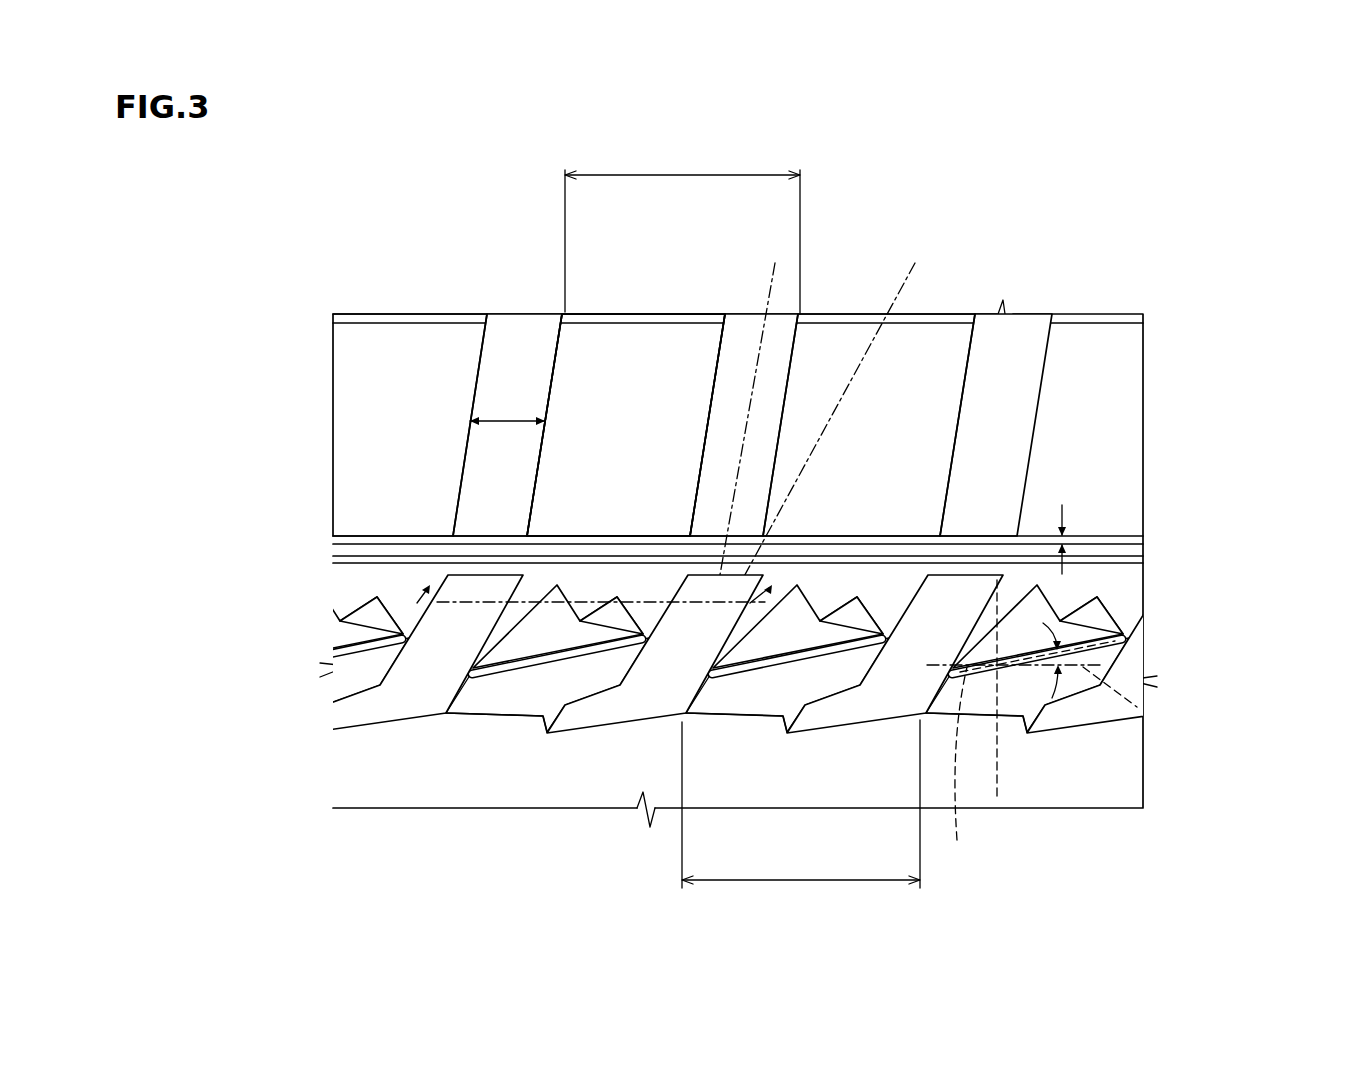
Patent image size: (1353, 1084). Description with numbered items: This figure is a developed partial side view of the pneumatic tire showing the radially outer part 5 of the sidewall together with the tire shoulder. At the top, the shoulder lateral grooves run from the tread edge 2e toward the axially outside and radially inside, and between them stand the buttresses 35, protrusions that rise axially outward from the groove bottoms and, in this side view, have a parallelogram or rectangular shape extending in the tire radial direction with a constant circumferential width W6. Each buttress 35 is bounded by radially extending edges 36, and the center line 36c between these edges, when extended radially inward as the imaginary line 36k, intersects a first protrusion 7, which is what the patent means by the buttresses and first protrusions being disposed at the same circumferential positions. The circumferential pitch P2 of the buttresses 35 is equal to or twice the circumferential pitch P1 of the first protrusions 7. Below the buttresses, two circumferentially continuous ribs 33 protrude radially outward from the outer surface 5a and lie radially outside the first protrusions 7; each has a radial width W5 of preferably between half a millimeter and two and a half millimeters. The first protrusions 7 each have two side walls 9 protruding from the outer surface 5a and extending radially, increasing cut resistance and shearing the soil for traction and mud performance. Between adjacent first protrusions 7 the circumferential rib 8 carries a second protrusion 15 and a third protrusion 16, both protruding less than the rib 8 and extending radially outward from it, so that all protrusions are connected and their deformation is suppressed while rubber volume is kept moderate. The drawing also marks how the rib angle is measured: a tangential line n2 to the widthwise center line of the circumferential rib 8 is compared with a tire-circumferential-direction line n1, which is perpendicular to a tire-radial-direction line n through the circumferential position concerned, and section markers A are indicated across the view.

The radially outer part 5 is at (1210, 318).
The tread edge 2e is at (363, 322).
The buttress 35 is at (513, 355).
The radially extending edge 36 is at (722, 352).
The center line 36c is at (753, 426).
The extended imaginary line 36k is at (840, 413).
The pitch of the buttresses P2 is at (682, 229).
The width of the buttress W6 is at (505, 420).
The circumferentially continuous rib 33 is at (352, 536).
The width of the circumferentially continuous rib W5 is at (1067, 538).
The circumferential rib 8 is at (520, 663).
The side wall 9 is at (627, 625).
The second protrusion 15 is at (1035, 612).
The third protrusion 16 is at (1092, 625).
The first protrusion 7 is at (627, 708).
The outer surface 5a is at (1092, 766).
The section line A is at (602, 582).
The tire-circumferential-direction line n1 is at (1120, 694).
The tire-radial-direction line n is at (998, 798).
The tangential line n2 is at (965, 767).
The pitch of the first protrusions P1 is at (801, 817).